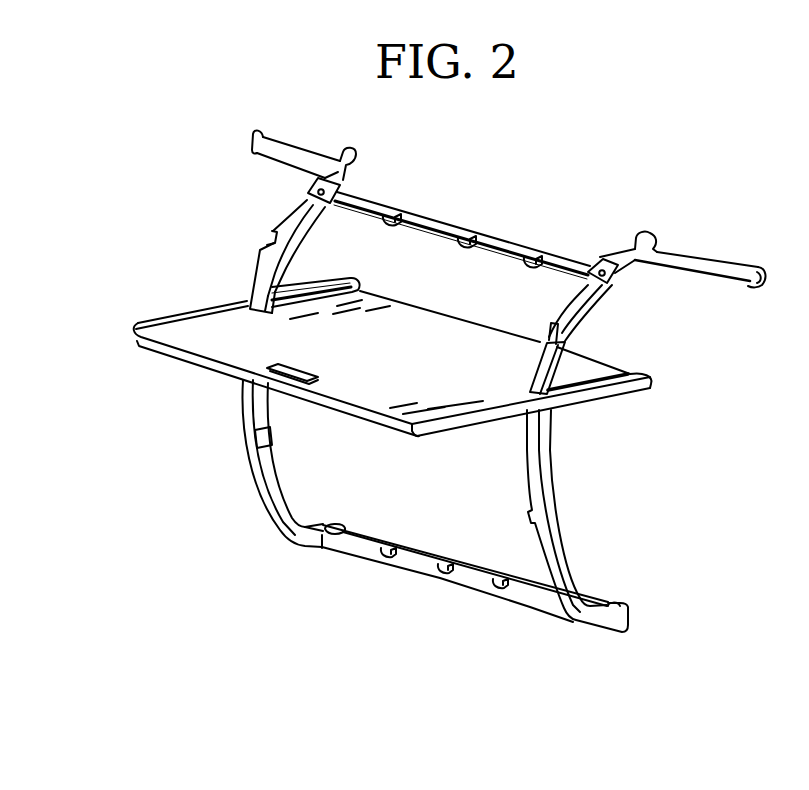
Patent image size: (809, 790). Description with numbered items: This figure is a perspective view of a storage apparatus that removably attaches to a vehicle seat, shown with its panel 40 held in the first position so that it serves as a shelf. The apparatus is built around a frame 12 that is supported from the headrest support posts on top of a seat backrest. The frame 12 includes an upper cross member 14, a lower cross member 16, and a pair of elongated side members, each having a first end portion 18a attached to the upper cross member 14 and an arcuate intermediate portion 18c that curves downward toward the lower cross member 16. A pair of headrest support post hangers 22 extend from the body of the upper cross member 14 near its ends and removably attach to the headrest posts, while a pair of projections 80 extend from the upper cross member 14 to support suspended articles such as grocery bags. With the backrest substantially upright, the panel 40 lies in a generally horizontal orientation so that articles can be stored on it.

The frame 12 is at (733, 182).
The upper cross member 14 is at (505, 242).
The lower cross member 16 is at (426, 549).
The first end portion 18a is at (294, 216).
The arcuate intermediate portion 18c is at (253, 296).
The headrest support post hanger 22 is at (298, 160).
The panel 40 is at (217, 340).
The projection 80 is at (527, 268).